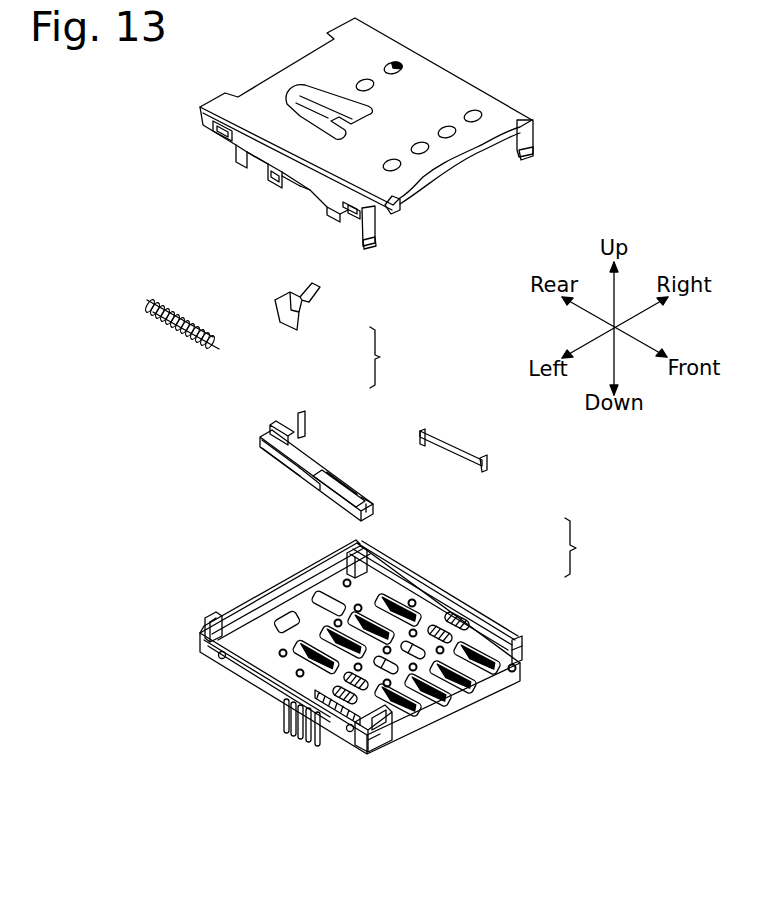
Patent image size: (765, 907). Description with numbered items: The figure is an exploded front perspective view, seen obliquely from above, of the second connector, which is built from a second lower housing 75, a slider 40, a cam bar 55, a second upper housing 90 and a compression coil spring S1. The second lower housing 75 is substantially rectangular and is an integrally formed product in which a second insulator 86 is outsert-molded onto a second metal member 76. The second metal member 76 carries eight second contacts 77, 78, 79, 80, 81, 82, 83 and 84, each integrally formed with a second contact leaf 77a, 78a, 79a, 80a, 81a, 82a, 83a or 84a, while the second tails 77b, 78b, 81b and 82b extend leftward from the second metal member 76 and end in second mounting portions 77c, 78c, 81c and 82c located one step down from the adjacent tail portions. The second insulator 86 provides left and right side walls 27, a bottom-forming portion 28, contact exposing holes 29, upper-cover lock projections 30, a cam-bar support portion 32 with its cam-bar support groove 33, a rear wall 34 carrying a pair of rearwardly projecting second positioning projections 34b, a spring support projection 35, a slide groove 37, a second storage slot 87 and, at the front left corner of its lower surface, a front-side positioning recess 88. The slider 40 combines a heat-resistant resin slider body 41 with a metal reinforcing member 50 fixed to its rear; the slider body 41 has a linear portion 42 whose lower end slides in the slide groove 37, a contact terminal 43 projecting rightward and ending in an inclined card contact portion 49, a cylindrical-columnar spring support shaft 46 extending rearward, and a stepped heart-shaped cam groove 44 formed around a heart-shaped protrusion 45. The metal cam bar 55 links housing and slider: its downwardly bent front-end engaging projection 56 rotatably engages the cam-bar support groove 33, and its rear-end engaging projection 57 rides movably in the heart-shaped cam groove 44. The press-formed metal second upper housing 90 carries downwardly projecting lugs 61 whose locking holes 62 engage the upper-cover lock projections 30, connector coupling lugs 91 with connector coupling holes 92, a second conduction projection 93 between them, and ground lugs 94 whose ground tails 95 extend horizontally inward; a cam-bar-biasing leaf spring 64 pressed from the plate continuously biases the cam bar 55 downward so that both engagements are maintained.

The second upper housing 90 is at (377, 152).
The second conduction projection 93 is at (282, 178).
The ground lug 94 is at (534, 134).
The ground tail 95 is at (527, 160).
The cam-bar-biasing leaf spring 64 is at (400, 209).
The lug 61 is at (242, 156).
The locking hole 62 is at (218, 134).
The connector coupling lug 91 is at (262, 167).
The connector coupling hole 92 is at (270, 174).
The compression coil spring S1 is at (178, 328).
The reinforcing member 50 is at (300, 327).
The slider 40 is at (262, 424).
The slider body 41 is at (306, 443).
The linear portion 42 is at (332, 474).
The contact terminal 43 is at (270, 428).
The heart-shaped cam groove 44 is at (318, 485).
The heart-shaped protrusion 45 is at (366, 497).
The spring support shaft 46 is at (272, 452).
The card contact portion 49 is at (307, 422).
The cam bar 55 is at (483, 437).
The front-end engaging projection 56 is at (487, 460).
The rear-end engaging projection 57 is at (426, 446).
The side wall 27 is at (364, 685).
The bottom-forming portion 28 is at (514, 640).
The contact exposing hole 29 is at (414, 600).
The upper-cover lock projection 30 is at (220, 659).
The cam-bar support portion 32 is at (389, 732).
The cam-bar support groove 33 is at (362, 746).
The rear wall 34 is at (268, 577).
The second positioning projection 34b is at (362, 558).
The spring support projection 35 is at (215, 621).
The slide groove 37 is at (305, 690).
The second lower housing 75 is at (477, 584).
The second metal member 76 is at (480, 637).
The second insulator 86 is at (470, 615).
The second storage slot 87 is at (522, 658).
The front-side positioning recess 88 is at (380, 752).
The second contact 77 is at (423, 762).
The second contact leaf 77a is at (400, 710).
The second contact 78 is at (454, 732).
The second contact leaf 78a is at (430, 700).
The second contact 79 is at (495, 713).
The second contact leaf 79a is at (455, 690).
The second contact 80 is at (525, 688).
The second contact leaf 80a is at (497, 690).
The second contact 81 is at (247, 685).
The second contact leaf 81a is at (300, 668).
The second contact 82 is at (247, 586).
The second contact leaf 82a is at (320, 600).
The second contact 83 is at (287, 587).
The second contact leaf 83a is at (360, 620).
The second contact 84 is at (310, 564).
The second contact leaf 84a is at (385, 600).
The second tail 77b is at (239, 791).
The second mounting portion 77c is at (318, 728).
The second tail 78b is at (235, 775).
The second mounting portion 78c is at (304, 722).
The second tail 81b is at (224, 747).
The second mounting portion 81c is at (288, 712).
The second tail 82b is at (227, 761).
The second mounting portion 82c is at (296, 716).